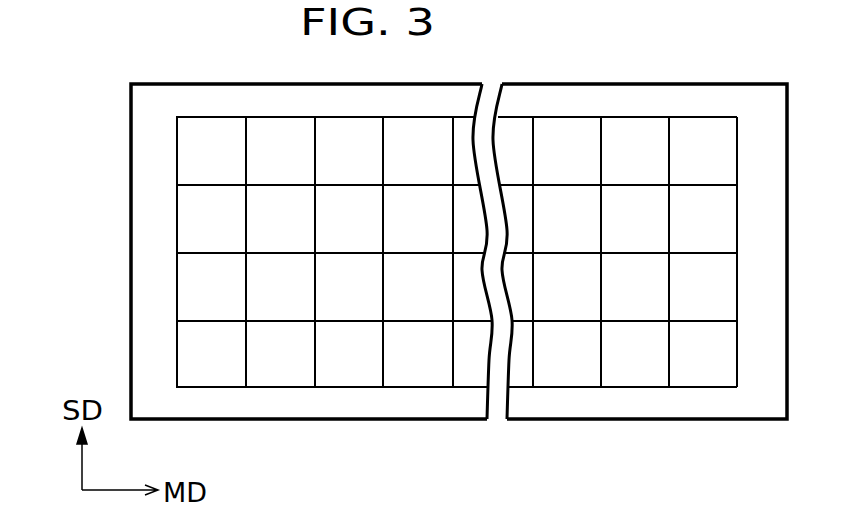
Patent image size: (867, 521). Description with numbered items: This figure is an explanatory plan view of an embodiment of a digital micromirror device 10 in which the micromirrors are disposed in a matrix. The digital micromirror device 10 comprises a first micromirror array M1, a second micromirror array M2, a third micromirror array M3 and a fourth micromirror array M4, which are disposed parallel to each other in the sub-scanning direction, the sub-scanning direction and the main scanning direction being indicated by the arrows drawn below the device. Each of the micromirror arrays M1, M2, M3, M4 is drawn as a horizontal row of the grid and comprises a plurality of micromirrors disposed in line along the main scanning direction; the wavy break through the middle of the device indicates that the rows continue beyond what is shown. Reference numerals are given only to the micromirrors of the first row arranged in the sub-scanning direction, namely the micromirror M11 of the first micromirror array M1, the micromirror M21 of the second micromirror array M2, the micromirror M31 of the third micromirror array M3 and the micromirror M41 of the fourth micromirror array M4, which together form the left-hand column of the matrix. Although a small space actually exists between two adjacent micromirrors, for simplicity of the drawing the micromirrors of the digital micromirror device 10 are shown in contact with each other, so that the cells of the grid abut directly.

The digital micromirror device 10 is at (566, 421).
The first micromirror array M1 is at (163, 360).
The second micromirror array M2 is at (163, 292).
The third micromirror array M3 is at (163, 224).
The fourth micromirror array M4 is at (163, 158).
The micromirror of first row in first micromirror array M11 is at (211, 354).
The micromirror of first row in second micromirror array M21 is at (211, 287).
The micromirror of first row in third micromirror array M31 is at (211, 219).
The micromirror of first row in fourth micromirror array M41 is at (211, 151).